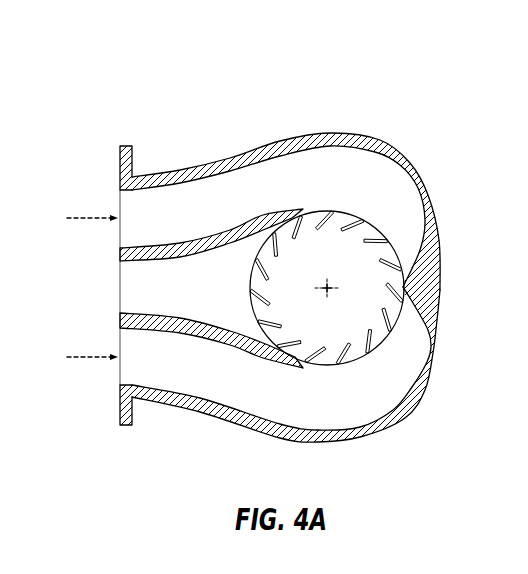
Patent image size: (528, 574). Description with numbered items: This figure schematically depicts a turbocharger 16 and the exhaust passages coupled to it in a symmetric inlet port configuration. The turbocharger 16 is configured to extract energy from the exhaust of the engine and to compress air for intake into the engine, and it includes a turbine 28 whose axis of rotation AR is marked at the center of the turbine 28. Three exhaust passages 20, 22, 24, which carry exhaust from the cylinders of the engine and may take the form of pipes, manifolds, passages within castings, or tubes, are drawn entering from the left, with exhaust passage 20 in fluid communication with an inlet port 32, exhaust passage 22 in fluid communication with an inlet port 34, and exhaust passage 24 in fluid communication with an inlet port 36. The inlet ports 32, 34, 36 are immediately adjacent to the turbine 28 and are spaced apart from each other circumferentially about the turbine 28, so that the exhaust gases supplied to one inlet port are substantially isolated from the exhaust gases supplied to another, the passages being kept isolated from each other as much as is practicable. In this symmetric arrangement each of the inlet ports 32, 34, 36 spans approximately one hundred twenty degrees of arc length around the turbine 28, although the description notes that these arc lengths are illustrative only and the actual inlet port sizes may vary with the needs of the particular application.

The turbocharger 16 is at (134, 67).
The exhaust passage 20 is at (83, 357).
The exhaust passage 22 is at (112, 288).
The exhaust passage 24 is at (84, 218).
The turbine 28 is at (338, 240).
The inlet port 32 is at (367, 365).
The inlet port 34 is at (235, 289).
The inlet port 36 is at (377, 213).
The axis of rotation AR is at (317, 286).